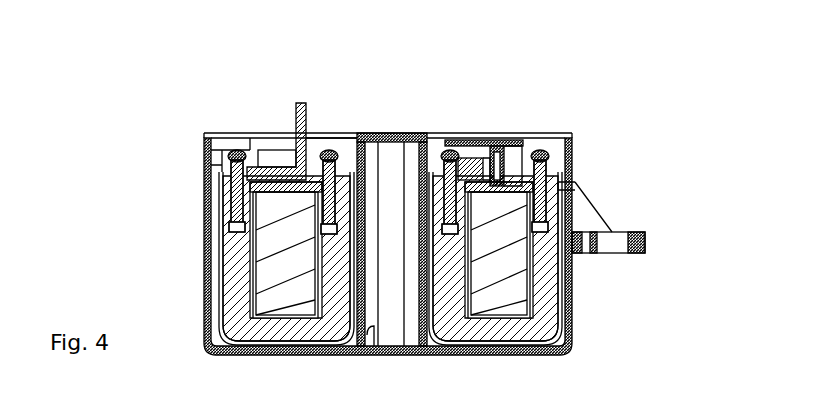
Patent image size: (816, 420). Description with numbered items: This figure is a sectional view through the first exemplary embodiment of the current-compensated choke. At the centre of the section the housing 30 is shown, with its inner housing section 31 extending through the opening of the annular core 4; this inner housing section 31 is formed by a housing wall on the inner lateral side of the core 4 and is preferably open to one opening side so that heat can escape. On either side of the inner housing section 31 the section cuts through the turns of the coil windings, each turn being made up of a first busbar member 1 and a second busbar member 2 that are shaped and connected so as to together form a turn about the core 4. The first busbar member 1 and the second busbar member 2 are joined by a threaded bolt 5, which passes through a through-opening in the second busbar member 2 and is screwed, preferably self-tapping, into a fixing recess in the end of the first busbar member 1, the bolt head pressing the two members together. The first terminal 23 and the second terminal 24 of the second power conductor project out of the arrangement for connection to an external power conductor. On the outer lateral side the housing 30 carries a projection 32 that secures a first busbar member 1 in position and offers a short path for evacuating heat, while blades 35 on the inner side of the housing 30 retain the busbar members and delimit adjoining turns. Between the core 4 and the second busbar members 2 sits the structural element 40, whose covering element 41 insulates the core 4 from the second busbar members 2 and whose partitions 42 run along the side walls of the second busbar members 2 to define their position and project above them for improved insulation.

The first busbar member 1 is at (283, 346).
The second busbar member 2 is at (322, 134).
The core 4 is at (548, 302).
The threaded bolt 5 is at (228, 150).
The first terminal 23 is at (304, 108).
The second terminal 24 is at (468, 150).
The housing 30 is at (466, 356).
The inner housing section 31 is at (395, 132).
The projection 32 is at (573, 282).
The blade 35 is at (412, 347).
The structural element 40 is at (505, 150).
The covering element 41 is at (280, 194).
The partition 42 is at (278, 188).